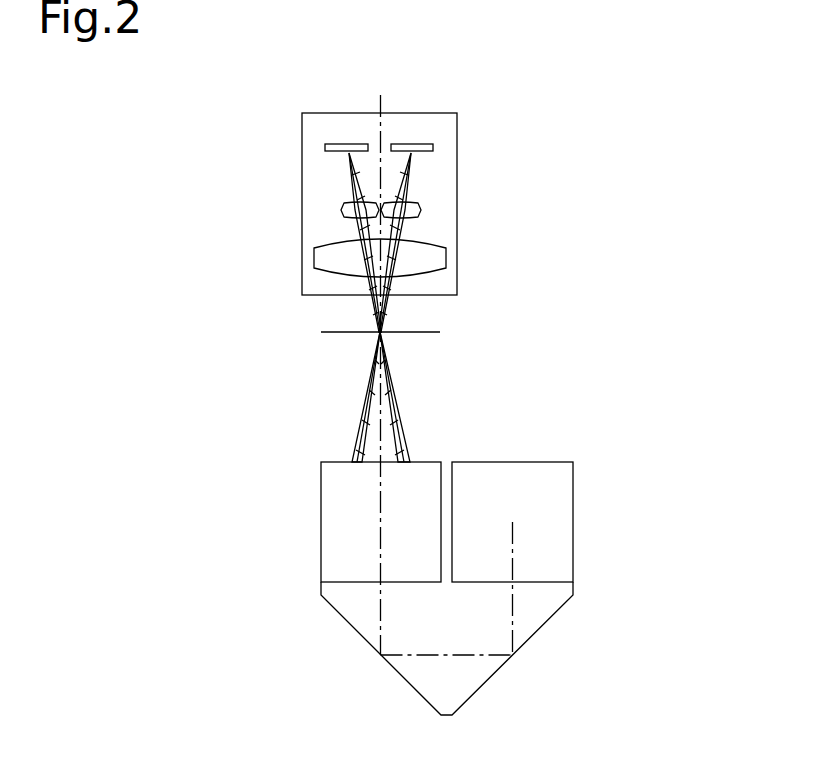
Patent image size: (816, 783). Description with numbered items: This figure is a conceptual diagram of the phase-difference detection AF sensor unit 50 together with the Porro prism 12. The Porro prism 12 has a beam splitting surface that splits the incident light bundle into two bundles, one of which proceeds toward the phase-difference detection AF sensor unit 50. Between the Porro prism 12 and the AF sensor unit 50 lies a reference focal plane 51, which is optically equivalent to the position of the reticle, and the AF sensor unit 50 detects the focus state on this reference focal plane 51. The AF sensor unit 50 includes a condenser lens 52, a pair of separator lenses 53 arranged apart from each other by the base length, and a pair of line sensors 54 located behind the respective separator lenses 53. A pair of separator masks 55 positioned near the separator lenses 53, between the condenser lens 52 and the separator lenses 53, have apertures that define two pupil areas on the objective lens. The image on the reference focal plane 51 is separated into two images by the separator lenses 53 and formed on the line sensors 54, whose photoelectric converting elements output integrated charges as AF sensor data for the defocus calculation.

The Porro prism 12 is at (634, 581).
The phase-difference detection AF sensor unit 50 is at (484, 138).
The reference focal plane 51 is at (417, 332).
The condenser lens 52 is at (435, 268).
The pair of separator lenses 53 is at (342, 207).
The pair of line sensors 54 is at (352, 143).
The pair of separator masks 55 is at (350, 228).